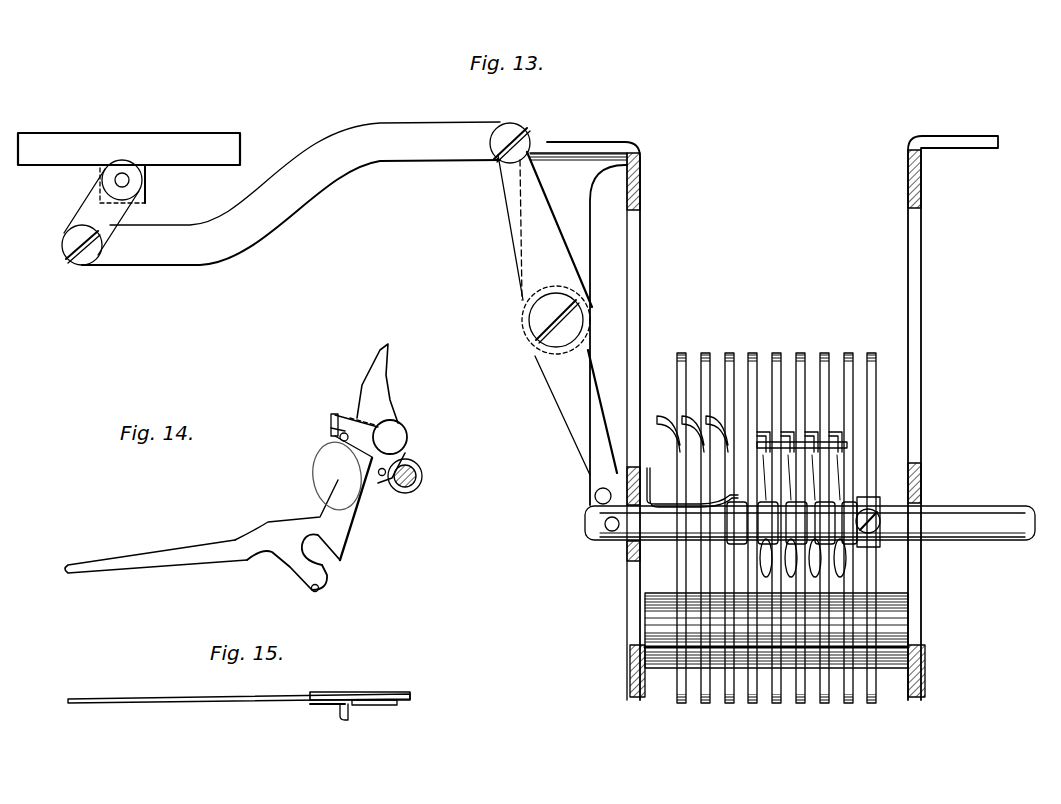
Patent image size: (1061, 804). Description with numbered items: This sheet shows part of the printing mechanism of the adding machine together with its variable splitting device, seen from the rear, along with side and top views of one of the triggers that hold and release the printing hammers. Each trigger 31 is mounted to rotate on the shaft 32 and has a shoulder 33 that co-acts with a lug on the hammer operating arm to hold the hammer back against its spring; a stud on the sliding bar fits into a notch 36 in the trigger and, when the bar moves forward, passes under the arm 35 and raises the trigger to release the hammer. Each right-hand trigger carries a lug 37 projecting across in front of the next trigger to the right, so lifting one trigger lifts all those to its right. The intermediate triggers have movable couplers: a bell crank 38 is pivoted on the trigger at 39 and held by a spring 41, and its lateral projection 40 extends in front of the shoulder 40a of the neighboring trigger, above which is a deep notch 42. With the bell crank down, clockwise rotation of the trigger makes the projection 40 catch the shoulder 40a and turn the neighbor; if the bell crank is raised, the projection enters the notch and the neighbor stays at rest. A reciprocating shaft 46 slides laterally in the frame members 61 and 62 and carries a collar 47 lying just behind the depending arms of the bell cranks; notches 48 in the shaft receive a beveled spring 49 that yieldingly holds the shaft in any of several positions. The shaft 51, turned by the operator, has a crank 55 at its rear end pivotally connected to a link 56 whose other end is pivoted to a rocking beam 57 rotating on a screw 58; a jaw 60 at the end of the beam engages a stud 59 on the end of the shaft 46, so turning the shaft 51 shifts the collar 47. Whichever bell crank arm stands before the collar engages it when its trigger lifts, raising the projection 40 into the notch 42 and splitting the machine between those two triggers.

In FIG. 13, the trigger 31 is at (872, 612).
In FIG. 14, the trigger 31 is at (235, 523).
In FIG. 14, the shaft 32 is at (312, 548).
In FIG. 14, the shoulder 33 is at (365, 378).
In FIG. 14, the arm 35 is at (105, 564).
In FIG. 15, the arm 35 is at (96, 698).
In FIG. 14, the notch 36 is at (263, 555).
In FIG. 13, the lug 37 is at (707, 420).
In FIG. 14, the bell crank 38 is at (333, 418).
In FIG. 15, the bell crank 38 is at (372, 708).
In FIG. 14, the pivot 39 is at (396, 440).
In FIG. 15, the pivot 39 is at (410, 700).
In FIG. 13, the lateral projection 40 is at (795, 430).
In FIG. 14, the lateral projection 40 is at (331, 428).
In FIG. 15, the lateral projection 40 is at (346, 716).
In FIG. 14, the shoulder 40a is at (340, 437).
In FIG. 13, the spring 41 is at (842, 568).
In FIG. 14, the spring 41 is at (312, 478).
In FIG. 15, the spring 41 is at (318, 708).
In FIG. 14, the notch 42 is at (358, 413).
In FIG. 13, the reciprocating shaft 46 is at (978, 504).
In FIG. 14, the reciprocating shaft 46 is at (406, 488).
In FIG. 13, the collar 47 is at (882, 540).
In FIG. 14, the collar 47 is at (423, 476).
In FIG. 13, the notches 48 is at (722, 542).
In FIG. 13, the spring 49 is at (666, 484).
In FIG. 13, the shaft 51 is at (133, 181).
In FIG. 13, the crank 55 is at (90, 216).
In FIG. 13, the link 56 is at (306, 193).
In FIG. 13, the rocking beam 57 is at (557, 313).
In FIG. 13, the screw 58 is at (548, 330).
In FIG. 13, the pin 59 is at (608, 531).
In FIG. 13, the jaw 60 is at (596, 494).
In FIG. 13, the frame member 61 is at (926, 492).
In FIG. 13, the frame member 62 is at (617, 477).